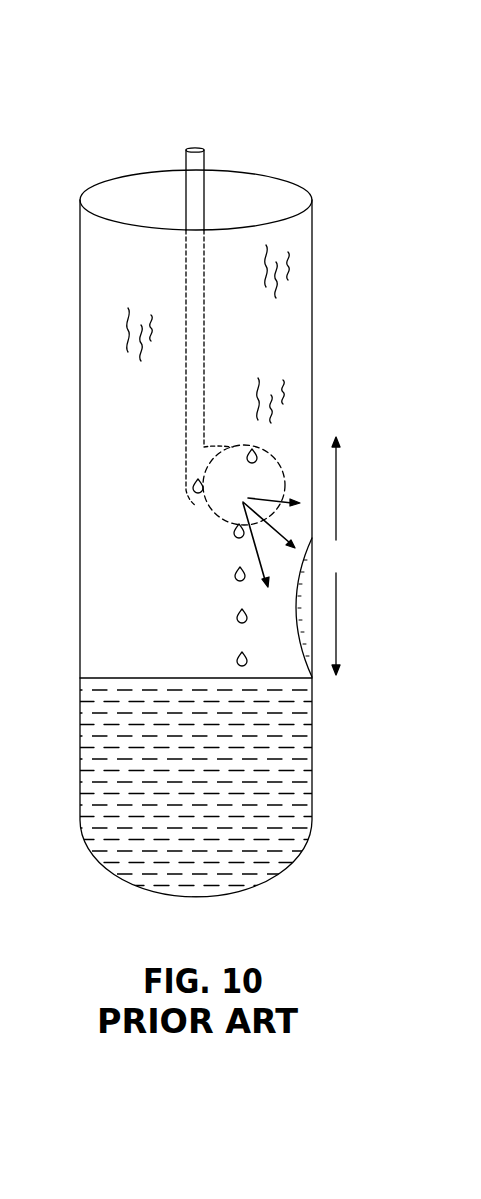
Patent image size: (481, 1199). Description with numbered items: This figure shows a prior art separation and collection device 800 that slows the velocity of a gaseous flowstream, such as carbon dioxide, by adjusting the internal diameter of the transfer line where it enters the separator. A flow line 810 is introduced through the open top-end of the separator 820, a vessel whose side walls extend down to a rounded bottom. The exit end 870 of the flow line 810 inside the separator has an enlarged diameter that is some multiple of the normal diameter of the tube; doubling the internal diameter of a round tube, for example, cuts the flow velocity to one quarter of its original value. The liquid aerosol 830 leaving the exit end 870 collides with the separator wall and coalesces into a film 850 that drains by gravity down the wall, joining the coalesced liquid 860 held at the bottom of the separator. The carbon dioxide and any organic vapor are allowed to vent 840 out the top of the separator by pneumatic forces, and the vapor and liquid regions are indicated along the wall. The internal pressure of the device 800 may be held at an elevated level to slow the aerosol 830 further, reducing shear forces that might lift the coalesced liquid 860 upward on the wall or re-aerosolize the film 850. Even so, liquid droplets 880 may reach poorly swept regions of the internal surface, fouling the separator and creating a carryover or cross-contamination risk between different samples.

The device 800 is at (300, 63).
The flow line 810 is at (195, 148).
The separator 820 is at (80, 403).
The liquid aerosol 830 is at (253, 562).
The vent 840 is at (290, 257).
The film 850 is at (313, 663).
The coalesced liquid 860 is at (302, 778).
The exit end 870 is at (204, 508).
The liquid droplets 880 is at (236, 655).